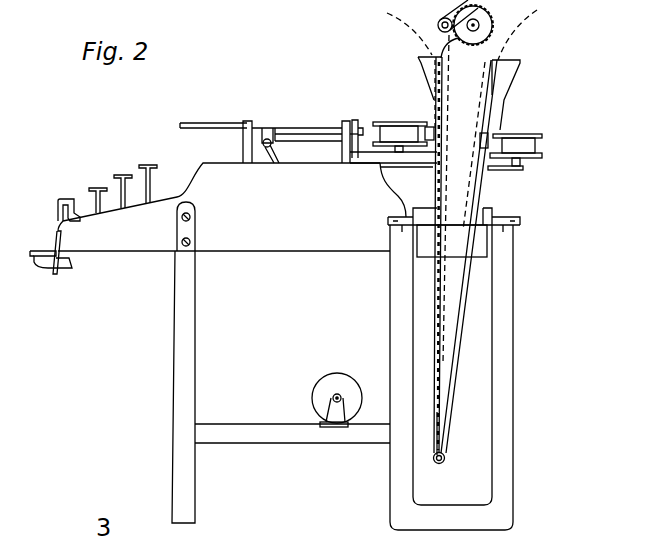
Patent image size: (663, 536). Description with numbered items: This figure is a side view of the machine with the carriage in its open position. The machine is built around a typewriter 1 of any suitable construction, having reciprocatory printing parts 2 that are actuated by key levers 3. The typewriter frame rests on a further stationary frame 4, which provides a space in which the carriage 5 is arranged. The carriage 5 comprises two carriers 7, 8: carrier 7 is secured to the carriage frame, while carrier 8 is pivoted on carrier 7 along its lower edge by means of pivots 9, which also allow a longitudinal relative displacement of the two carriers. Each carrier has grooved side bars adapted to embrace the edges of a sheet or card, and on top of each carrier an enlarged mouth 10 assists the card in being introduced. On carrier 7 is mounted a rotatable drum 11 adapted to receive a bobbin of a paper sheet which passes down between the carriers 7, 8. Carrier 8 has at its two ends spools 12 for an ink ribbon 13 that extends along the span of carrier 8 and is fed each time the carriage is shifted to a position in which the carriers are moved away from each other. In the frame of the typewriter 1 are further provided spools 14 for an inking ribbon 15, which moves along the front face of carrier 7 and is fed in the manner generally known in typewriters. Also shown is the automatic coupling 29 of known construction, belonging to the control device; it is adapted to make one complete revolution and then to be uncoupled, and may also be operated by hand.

The typewriter 1 is at (200, 178).
The reciprocatory printing parts 2 is at (307, 128).
The key levers 3 is at (100, 187).
The stationary frame 4 is at (393, 322).
The carriage 5 is at (497, 222).
The carrier 7 is at (435, 412).
The carrier 8 is at (455, 375).
The pivots 9 is at (445, 460).
The enlarged mouth 10 is at (430, 72).
The rotatable drum 11 is at (485, 20).
The spools 12 is at (513, 134).
The ink ribbon 13 is at (490, 142).
The spools 14 is at (385, 122).
The inking ribbon 15 is at (423, 125).
The automatic coupling 29 is at (323, 383).